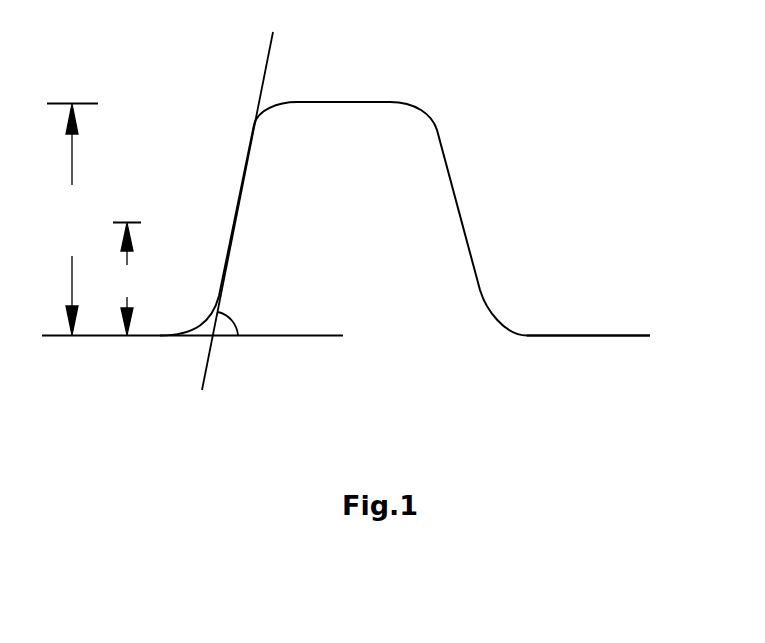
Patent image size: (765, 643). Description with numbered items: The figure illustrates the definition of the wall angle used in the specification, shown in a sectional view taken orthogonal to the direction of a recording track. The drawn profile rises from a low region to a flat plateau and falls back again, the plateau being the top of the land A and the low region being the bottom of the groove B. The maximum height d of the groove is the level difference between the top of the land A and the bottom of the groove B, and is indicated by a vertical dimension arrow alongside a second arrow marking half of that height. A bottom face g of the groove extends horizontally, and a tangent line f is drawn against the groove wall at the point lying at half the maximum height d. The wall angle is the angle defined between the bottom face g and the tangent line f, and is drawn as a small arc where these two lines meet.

The land A is at (368, 82).
The groove B is at (566, 316).
The tangent line f is at (265, 63).
The bottom face g is at (298, 336).
The maximum height d is at (72, 220).